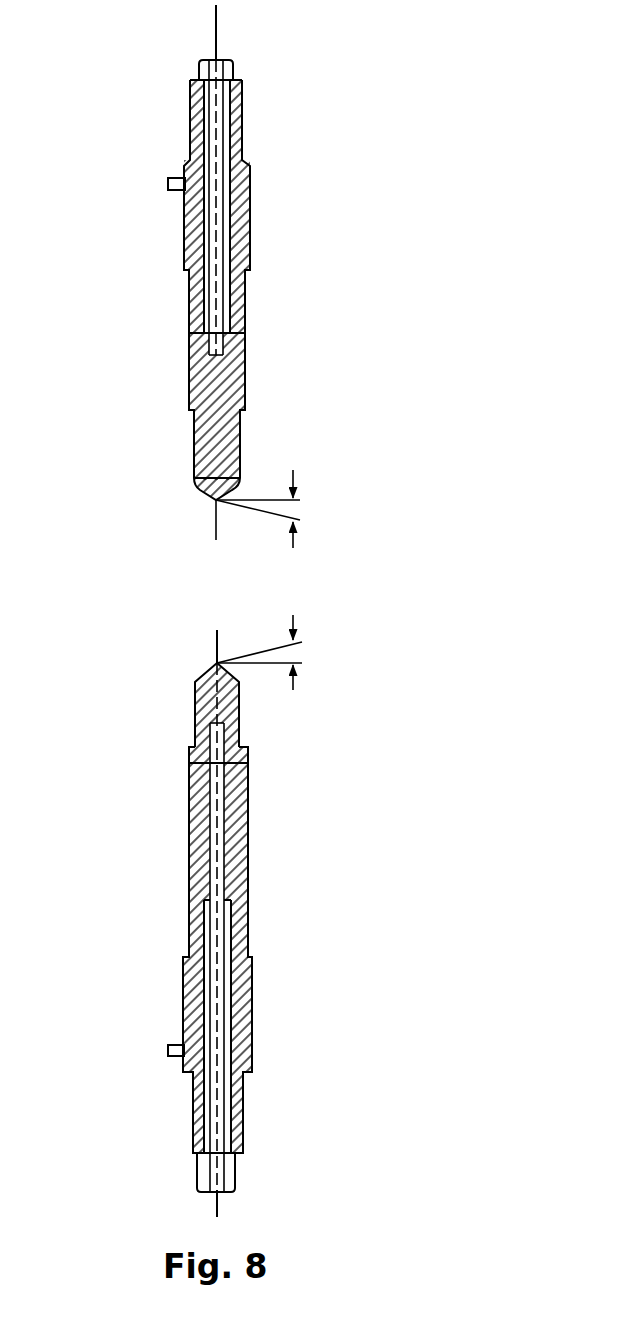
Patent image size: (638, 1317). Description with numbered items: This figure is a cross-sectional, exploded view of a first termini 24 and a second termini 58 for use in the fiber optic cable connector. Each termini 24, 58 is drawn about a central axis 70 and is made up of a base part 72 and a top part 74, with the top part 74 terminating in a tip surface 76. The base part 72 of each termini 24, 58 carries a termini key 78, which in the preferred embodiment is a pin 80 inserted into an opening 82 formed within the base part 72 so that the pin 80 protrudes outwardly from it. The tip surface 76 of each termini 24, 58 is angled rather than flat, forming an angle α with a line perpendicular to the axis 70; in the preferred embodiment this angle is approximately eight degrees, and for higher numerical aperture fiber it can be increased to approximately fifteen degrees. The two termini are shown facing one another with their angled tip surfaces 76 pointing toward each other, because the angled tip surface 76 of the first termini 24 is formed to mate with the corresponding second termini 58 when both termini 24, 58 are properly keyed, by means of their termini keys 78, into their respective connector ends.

The central axis 70 is at (214, 30).
The base part 72 is at (255, 194).
The top part 74 is at (251, 386).
The tip surface 76 is at (216, 500).
The termini key 78 is at (157, 183).
The pin 80 is at (172, 178).
The opening 82 is at (187, 176).
The second termini 58 is at (379, 316).
The first termini 24 is at (384, 909).